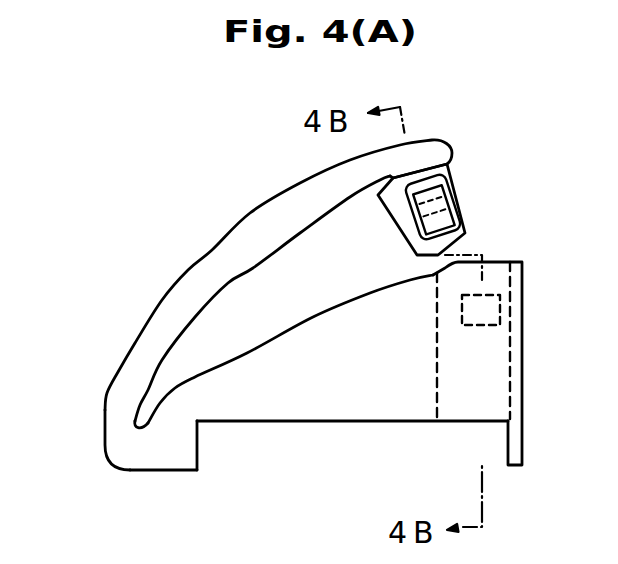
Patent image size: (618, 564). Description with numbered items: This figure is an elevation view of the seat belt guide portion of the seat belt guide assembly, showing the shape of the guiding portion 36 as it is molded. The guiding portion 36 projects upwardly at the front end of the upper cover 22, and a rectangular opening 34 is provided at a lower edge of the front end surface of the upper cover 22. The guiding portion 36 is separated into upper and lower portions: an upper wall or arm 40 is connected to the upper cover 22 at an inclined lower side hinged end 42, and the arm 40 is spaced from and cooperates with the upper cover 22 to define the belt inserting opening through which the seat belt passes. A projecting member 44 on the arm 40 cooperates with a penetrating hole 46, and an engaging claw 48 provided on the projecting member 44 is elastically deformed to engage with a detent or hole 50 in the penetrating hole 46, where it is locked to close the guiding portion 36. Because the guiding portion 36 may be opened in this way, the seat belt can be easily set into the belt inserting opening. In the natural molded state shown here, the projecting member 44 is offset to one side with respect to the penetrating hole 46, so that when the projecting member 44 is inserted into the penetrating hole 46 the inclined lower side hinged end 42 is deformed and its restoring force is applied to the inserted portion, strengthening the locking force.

The upper cover 22 is at (145, 471).
The rectangular opening 34 is at (200, 453).
The guiding portion 36 is at (167, 275).
The upper wall or arm 40 is at (242, 243).
The inclined lower side hinged end 42 is at (115, 445).
The projecting member 44 is at (397, 213).
The penetrating hole 46 is at (442, 420).
The engaging claw 48 is at (455, 214).
The detent or hole 50 is at (502, 314).